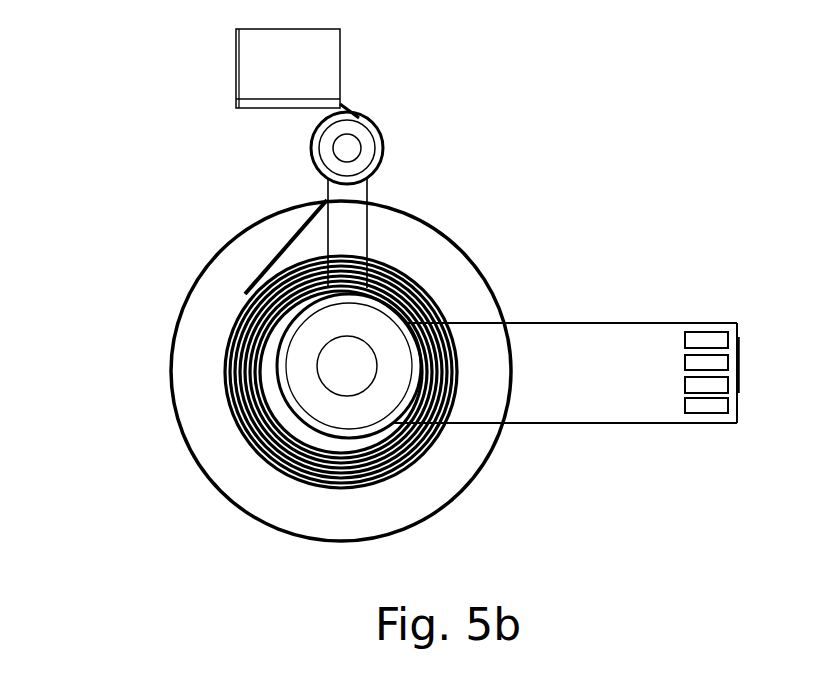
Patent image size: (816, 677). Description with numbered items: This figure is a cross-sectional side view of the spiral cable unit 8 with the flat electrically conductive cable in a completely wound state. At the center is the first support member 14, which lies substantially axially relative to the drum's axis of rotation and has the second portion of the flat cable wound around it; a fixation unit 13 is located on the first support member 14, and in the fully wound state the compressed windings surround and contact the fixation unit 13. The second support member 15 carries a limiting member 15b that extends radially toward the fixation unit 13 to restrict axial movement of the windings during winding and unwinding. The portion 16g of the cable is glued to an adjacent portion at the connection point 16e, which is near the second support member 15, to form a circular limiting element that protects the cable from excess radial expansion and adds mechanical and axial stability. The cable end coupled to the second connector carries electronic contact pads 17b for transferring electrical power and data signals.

The spiral cable unit 8 is at (623, 163).
The fixation unit 13 is at (409, 324).
The first support member 14 is at (370, 391).
The second support member 15 is at (387, 137).
The limiting member 15b is at (369, 220).
The connection point 16e is at (322, 198).
The portion of the flat electrically conductive cable 16g is at (207, 258).
The electronic contact pad 17b is at (707, 330).